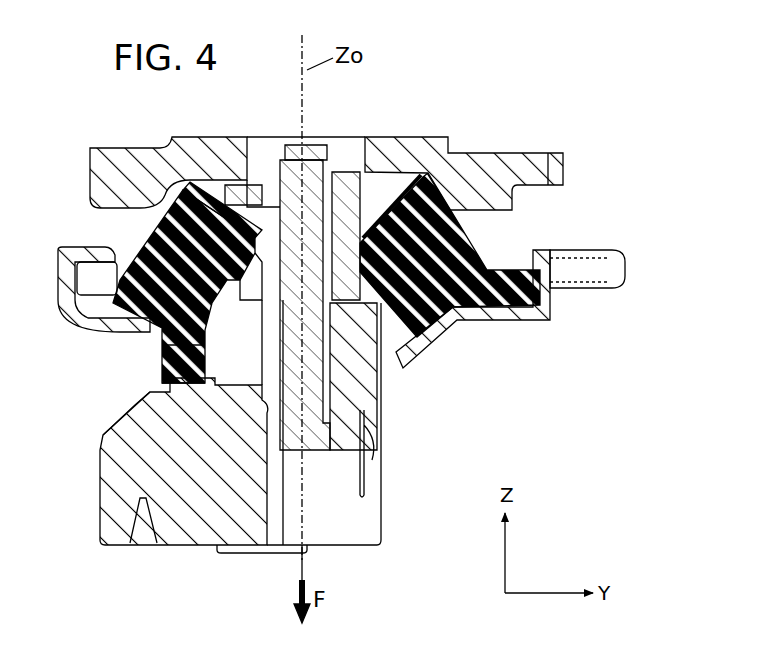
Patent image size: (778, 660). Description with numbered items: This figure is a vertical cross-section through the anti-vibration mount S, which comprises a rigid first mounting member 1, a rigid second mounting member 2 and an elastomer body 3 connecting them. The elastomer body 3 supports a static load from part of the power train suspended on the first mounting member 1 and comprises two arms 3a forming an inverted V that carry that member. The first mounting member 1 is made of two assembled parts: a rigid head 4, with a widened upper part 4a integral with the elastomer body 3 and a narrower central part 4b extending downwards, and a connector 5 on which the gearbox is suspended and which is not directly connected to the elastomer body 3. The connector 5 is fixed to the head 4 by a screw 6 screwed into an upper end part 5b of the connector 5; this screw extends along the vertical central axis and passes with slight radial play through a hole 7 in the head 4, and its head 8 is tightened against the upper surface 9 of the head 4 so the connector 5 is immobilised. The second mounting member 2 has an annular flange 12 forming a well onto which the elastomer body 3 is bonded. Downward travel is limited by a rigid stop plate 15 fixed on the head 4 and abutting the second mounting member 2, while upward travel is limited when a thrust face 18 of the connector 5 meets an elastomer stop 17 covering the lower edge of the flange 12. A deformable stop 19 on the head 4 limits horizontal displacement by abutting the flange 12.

The first mounting member 1 is at (365, 120).
The second mounting member 2 is at (633, 265).
The elastomer body 3 is at (470, 243).
The arms 3a is at (163, 262).
The head 4 is at (352, 215).
The widened upper part 4a is at (185, 185).
The central part 4b is at (227, 305).
The connector 5 is at (195, 528).
The upper end part 5b is at (150, 267).
The screw 6 is at (313, 340).
The hole 7 is at (410, 350).
The head of the screw 8 is at (297, 183).
The upper surface 9 is at (227, 187).
The annular flange 12 is at (187, 353).
The stop plate 15 is at (480, 167).
The elastomer stop 17 is at (173, 380).
The thrust face 18 is at (185, 392).
The deformable stop 19 is at (387, 173).
The anti-vibration mount S is at (575, 117).